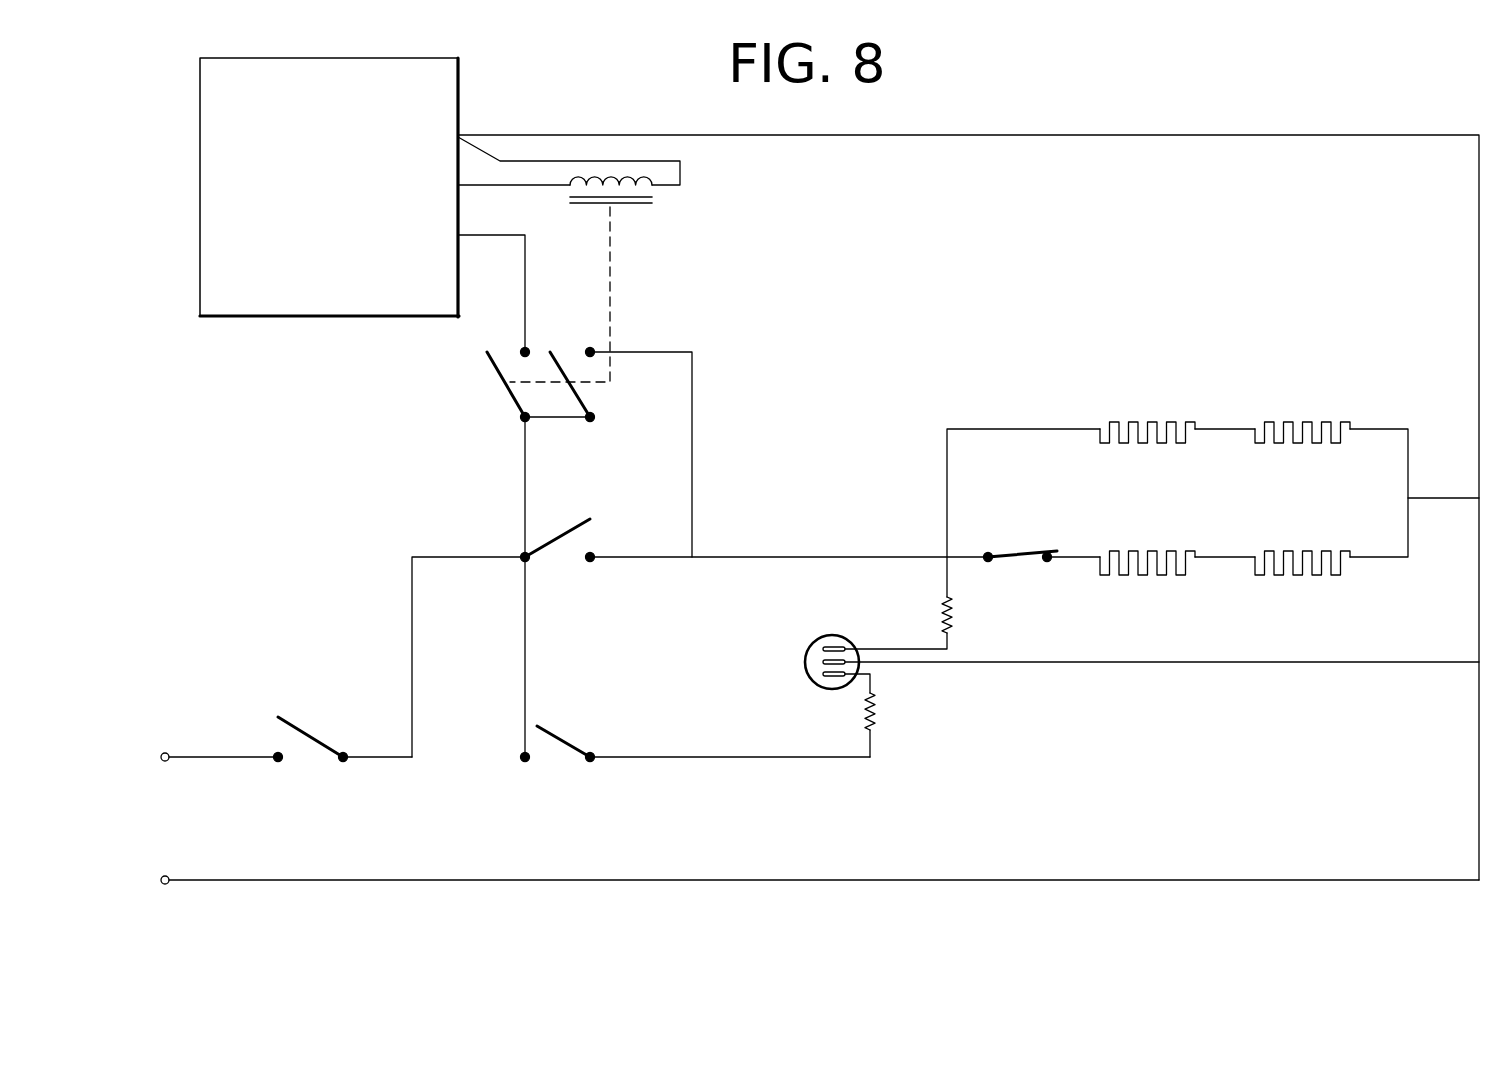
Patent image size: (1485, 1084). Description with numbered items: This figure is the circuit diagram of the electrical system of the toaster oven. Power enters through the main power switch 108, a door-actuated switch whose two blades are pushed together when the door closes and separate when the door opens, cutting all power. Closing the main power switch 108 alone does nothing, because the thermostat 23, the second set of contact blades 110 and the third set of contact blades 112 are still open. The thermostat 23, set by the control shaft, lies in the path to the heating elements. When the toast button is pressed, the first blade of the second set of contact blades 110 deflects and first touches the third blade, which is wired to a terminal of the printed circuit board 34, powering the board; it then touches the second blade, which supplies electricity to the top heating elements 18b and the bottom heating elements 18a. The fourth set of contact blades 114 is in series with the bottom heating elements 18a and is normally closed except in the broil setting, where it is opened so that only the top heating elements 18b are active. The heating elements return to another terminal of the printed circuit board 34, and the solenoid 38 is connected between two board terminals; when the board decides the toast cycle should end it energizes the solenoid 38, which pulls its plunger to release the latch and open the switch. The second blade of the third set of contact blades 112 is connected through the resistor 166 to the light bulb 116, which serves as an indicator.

The printed circuit board 34 is at (277, 318).
The solenoid 38 is at (650, 219).
The second set of contact blades 110 is at (480, 374).
The thermostat 23 is at (560, 520).
The main power switch 108 is at (324, 727).
The third set of contact blades 112 is at (570, 716).
The fourth set of contact blades 114 is at (1014, 538).
The bottom heating elements 18a is at (1290, 553).
The top heating elements 18b is at (1308, 422).
The light bulb 116 is at (806, 664).
The resistor 166 is at (882, 716).